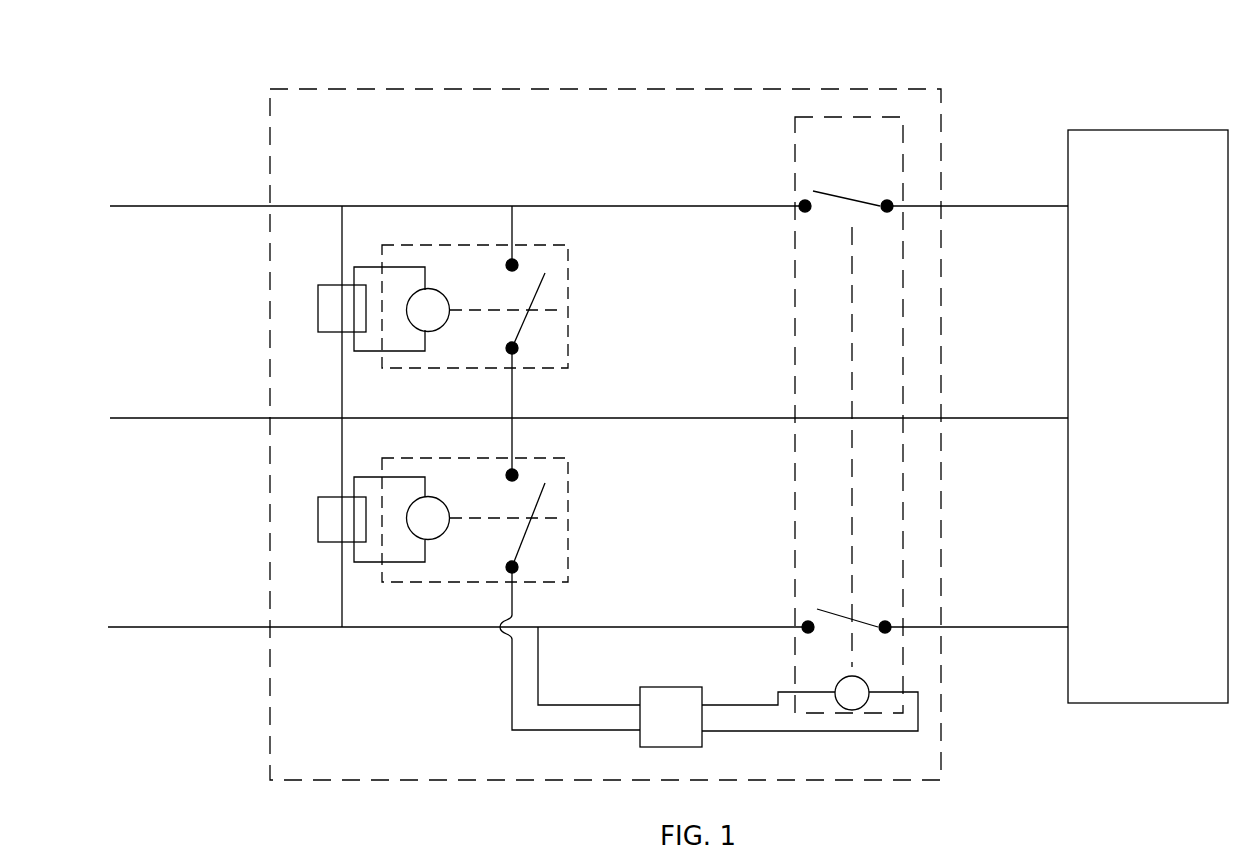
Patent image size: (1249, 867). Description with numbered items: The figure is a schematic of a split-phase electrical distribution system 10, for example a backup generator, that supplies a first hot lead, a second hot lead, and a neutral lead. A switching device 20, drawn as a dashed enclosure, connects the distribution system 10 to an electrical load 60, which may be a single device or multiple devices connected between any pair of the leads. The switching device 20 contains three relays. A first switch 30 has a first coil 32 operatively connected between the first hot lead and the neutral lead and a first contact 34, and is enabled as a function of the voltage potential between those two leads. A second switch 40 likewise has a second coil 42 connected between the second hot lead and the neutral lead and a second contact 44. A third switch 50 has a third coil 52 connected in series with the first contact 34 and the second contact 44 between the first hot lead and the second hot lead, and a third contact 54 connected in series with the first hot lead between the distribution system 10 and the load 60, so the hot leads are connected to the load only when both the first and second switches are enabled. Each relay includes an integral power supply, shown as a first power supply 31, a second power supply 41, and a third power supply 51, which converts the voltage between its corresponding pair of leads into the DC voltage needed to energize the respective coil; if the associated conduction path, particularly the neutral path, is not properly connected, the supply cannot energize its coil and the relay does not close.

The split-phase electrical distribution system 10 is at (97, 146).
The switching device 20 is at (362, 88).
The first switch 30 is at (568, 288).
The first power supply 31 is at (319, 289).
The first coil 32 is at (446, 297).
The first contact 34 is at (541, 328).
The second switch 40 is at (568, 500).
The second power supply 41 is at (319, 500).
The second coil 42 is at (446, 505).
The second contact 44 is at (541, 545).
The third switch 50 is at (795, 503).
The third power supply 51 is at (660, 747).
The third coil 52 is at (838, 685).
The third contact 54 is at (859, 187).
The electrical load 60 is at (1127, 130).